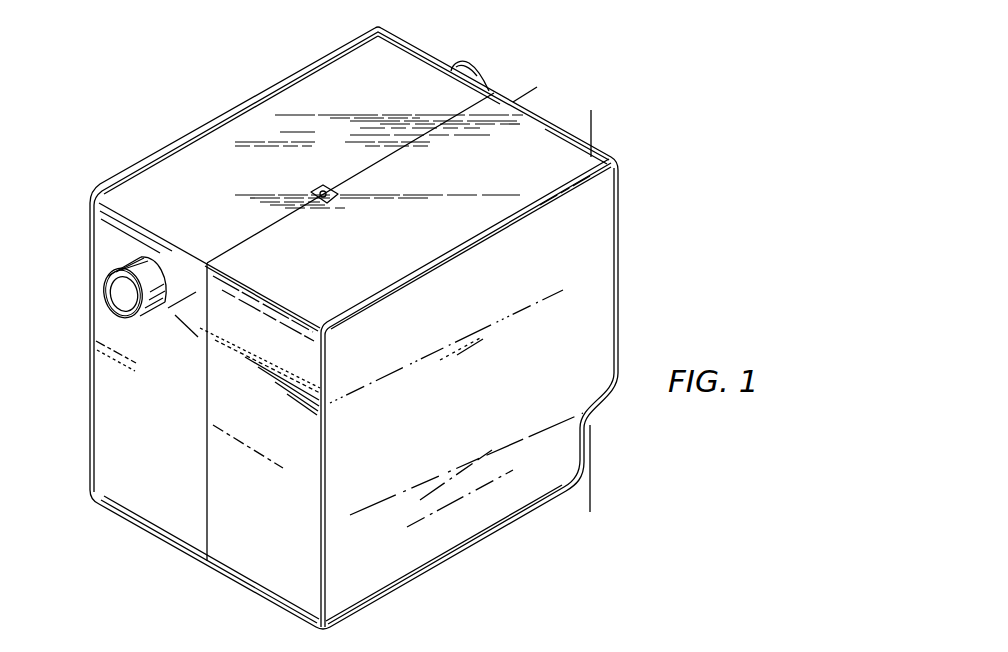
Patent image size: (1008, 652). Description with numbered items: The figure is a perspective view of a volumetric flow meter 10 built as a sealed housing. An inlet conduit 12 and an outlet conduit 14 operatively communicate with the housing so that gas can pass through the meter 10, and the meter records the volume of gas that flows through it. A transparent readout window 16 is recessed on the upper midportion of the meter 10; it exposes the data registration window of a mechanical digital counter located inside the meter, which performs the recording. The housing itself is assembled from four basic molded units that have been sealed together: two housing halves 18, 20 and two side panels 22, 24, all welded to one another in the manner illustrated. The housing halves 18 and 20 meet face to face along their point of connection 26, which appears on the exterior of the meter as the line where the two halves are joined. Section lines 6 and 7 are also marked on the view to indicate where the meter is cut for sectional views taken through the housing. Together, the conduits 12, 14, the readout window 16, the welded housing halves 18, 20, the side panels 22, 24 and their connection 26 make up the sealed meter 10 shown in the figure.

The section line 6- 6 is at (528, 91).
The section line 7- 7 is at (594, 120).
The meter 10 is at (183, 125).
The inlet conduit 12 is at (105, 298).
The outlet conduit 14 is at (471, 63).
The transparent readout window 16 is at (326, 185).
The housing half 18 is at (555, 126).
The housing half 20 is at (423, 52).
The side panel 22 is at (613, 300).
The side panel 24 is at (351, 43).
The point of connection 26 is at (207, 543).